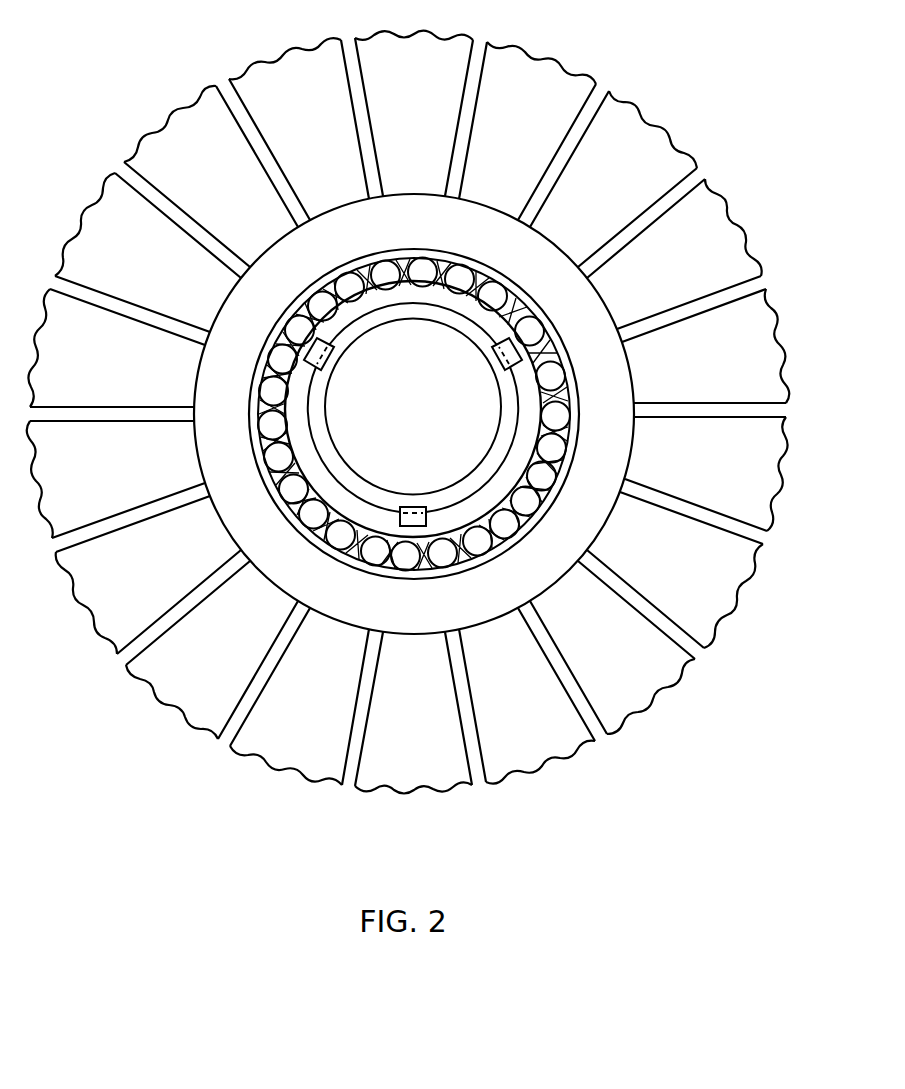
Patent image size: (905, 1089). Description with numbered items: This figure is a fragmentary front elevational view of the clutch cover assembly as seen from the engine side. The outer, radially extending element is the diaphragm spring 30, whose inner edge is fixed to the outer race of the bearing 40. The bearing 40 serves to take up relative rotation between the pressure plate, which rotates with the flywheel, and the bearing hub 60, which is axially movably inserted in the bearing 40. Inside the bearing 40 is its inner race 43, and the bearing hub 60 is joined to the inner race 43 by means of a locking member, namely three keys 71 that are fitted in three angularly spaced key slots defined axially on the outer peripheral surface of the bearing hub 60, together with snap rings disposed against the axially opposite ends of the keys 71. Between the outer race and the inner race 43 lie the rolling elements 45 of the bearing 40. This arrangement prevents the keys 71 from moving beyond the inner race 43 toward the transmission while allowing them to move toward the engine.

The diaphragm spring 30 is at (702, 228).
The bearing 40 is at (487, 567).
The inner race 43 is at (447, 528).
The balls 45 is at (373, 557).
The bearing hub 60 is at (352, 490).
The keys 71 is at (507, 348).